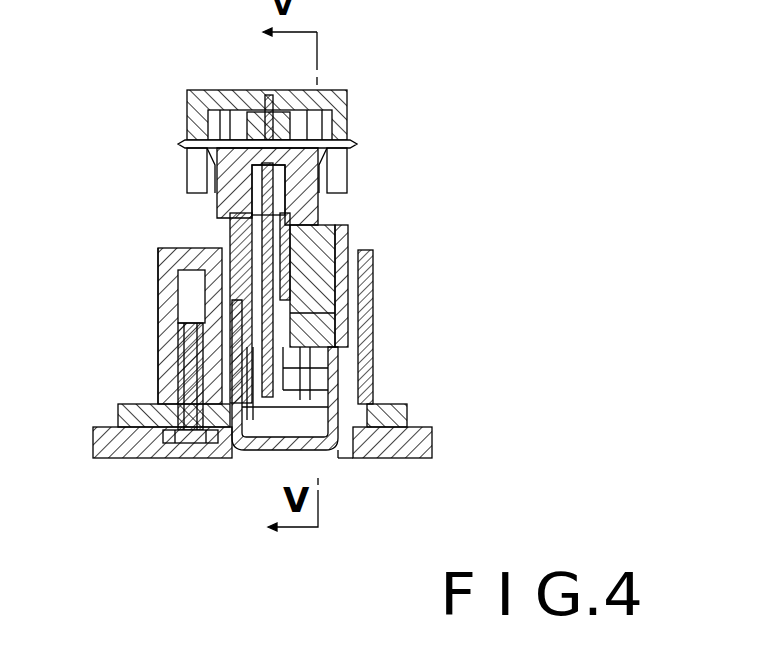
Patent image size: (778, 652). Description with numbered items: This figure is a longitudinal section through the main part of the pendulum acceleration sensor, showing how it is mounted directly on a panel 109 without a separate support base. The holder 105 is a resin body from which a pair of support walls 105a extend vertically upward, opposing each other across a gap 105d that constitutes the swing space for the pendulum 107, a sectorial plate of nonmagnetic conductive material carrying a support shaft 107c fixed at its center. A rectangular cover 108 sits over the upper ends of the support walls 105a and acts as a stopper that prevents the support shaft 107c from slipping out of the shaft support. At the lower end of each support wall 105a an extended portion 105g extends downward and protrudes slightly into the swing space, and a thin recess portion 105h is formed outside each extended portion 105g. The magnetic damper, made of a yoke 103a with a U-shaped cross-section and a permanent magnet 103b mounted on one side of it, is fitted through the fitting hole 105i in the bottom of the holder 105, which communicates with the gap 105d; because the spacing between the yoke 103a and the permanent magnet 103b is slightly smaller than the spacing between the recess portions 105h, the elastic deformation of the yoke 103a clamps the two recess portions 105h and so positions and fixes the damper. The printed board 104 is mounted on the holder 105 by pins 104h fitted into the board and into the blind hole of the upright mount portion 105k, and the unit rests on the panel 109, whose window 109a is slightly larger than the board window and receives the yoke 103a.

The cover 108 is at (356, 96).
The support shaft 107c is at (354, 141).
The support wall 105a is at (330, 200).
The holder 105 is at (373, 252).
The gap 105d is at (262, 242).
The extended portion 105g is at (258, 303).
The recess portion 105h is at (342, 227).
The fitting hole 105i is at (268, 402).
The mount portion 105k is at (158, 352).
The pendulum 107 is at (243, 450).
The yoke 103a is at (278, 445).
The permanent magnet 103b is at (312, 364).
The printed board 104 is at (413, 408).
The pin 104h is at (181, 445).
The panel 109 is at (440, 443).
The window 109a is at (342, 452).